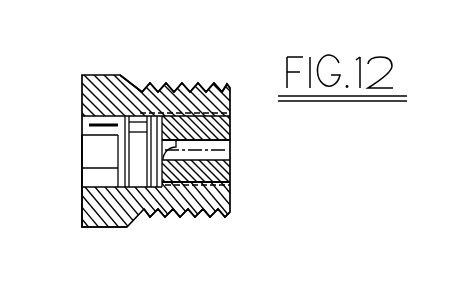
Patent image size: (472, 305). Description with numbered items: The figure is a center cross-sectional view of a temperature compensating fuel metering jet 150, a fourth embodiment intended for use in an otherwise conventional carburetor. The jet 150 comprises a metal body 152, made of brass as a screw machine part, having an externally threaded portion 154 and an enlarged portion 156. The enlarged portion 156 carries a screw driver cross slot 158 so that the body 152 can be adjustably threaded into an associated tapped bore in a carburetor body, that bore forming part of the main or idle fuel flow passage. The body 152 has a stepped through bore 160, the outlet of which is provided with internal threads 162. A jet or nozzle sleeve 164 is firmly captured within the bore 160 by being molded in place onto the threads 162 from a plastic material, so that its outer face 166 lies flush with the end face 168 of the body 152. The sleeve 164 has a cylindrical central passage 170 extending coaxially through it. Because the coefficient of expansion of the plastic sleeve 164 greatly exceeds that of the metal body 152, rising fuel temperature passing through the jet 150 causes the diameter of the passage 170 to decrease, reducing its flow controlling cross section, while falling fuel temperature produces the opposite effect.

The jet 150 is at (255, 38).
The metal body 152 is at (128, 225).
The externally threaded portion 154 is at (196, 218).
The enlarged portion 156 is at (82, 205).
The screw driver cross slot 158 is at (92, 140).
The stepped through bore 160 is at (167, 83).
The internal threads 162 is at (232, 172).
The jet or nozzle sleeve 164 is at (238, 160).
The outer face 166 is at (232, 130).
The end face 168 is at (232, 196).
The cylindrical central passage 170 is at (172, 149).